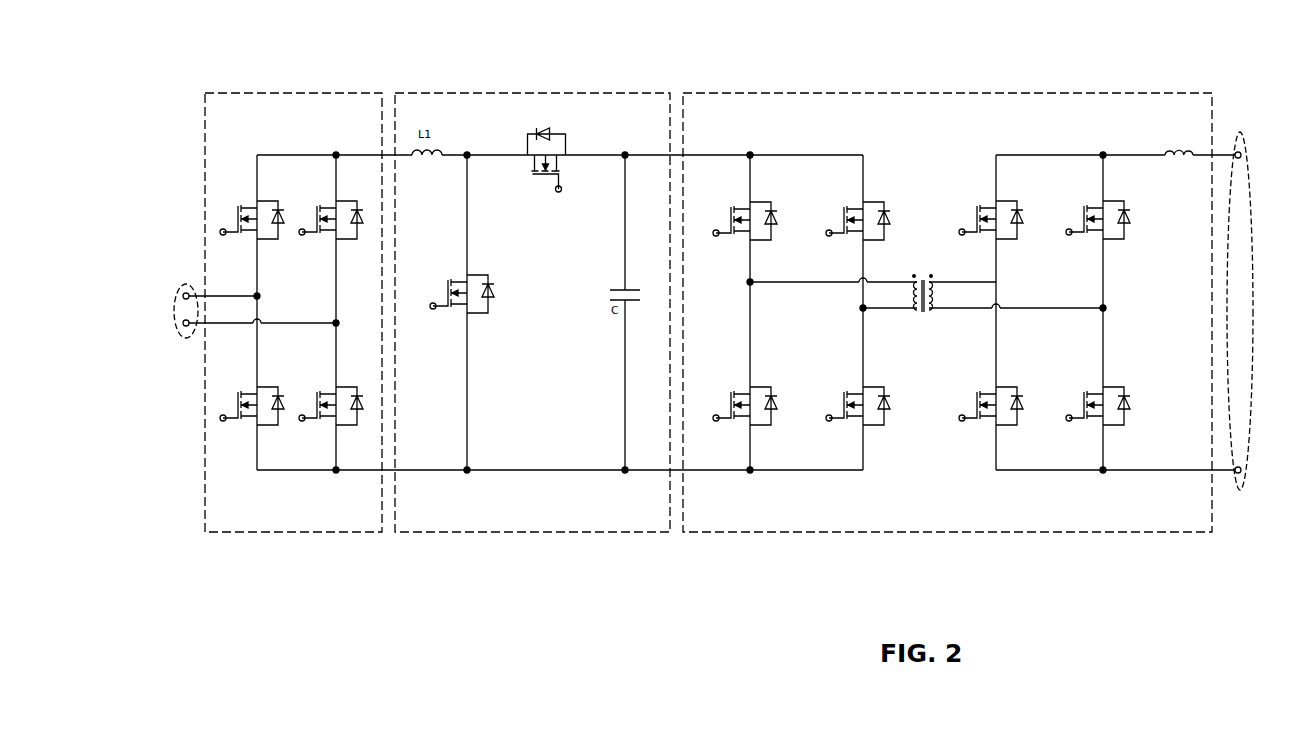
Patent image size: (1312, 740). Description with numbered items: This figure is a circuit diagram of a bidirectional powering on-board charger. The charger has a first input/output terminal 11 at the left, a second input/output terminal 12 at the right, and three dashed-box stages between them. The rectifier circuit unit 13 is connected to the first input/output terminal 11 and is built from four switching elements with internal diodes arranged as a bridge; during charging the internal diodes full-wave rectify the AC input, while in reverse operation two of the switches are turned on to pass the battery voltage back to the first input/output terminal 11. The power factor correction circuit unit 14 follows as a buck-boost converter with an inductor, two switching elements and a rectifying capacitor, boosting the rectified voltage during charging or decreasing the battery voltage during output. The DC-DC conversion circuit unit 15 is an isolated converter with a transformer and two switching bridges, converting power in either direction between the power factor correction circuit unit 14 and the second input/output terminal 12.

The first input/output terminal 11 is at (186, 284).
The second input/output terminal 12 is at (1240, 128).
The rectifier circuit unit 13 is at (303, 92).
The power factor correction circuit unit 14 is at (540, 92).
The DC-DC conversion circuit unit 15 is at (900, 92).